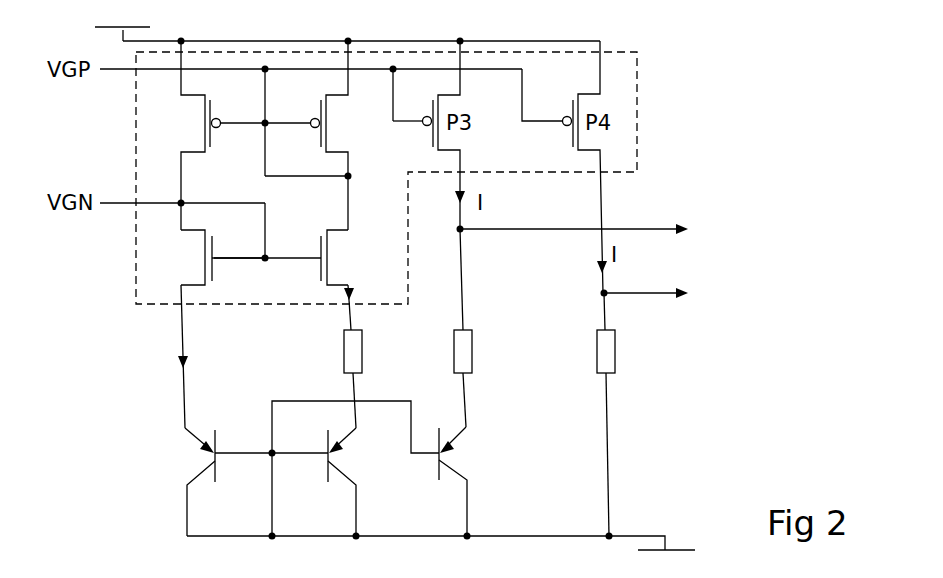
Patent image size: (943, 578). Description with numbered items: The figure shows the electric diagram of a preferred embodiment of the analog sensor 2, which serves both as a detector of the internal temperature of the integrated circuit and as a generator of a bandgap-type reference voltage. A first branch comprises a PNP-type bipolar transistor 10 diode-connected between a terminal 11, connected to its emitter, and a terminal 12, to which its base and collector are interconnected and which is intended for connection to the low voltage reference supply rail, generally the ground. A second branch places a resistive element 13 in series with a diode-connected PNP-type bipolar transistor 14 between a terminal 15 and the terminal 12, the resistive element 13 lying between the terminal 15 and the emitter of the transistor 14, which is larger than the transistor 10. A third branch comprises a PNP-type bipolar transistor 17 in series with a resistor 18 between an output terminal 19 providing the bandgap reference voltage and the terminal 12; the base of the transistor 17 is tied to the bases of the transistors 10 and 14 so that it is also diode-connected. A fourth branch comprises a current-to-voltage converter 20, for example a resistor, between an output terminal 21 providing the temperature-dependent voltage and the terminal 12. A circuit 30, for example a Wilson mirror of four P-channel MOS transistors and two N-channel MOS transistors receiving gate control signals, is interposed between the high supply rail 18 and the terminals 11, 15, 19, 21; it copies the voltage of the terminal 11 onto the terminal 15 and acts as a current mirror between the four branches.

The analog sensor 2 is at (704, 96).
The PNP-type bipolar transistor 10 is at (200, 461).
The terminal 11 is at (183, 332).
The terminal 12 is at (187, 537).
The resistive element 13 is at (344, 351).
The diode-connected PNP-type bipolar transistor 14 is at (352, 463).
The terminal 15 is at (352, 320).
The PNP-type bipolar transistor 17 is at (455, 468).
The resistor 18 is at (573, 40).
The output terminal 19 is at (462, 231).
The current-to-voltage converter 20 is at (615, 347).
The output terminal 21 is at (606, 291).
The circuit 30 is at (140, 273).